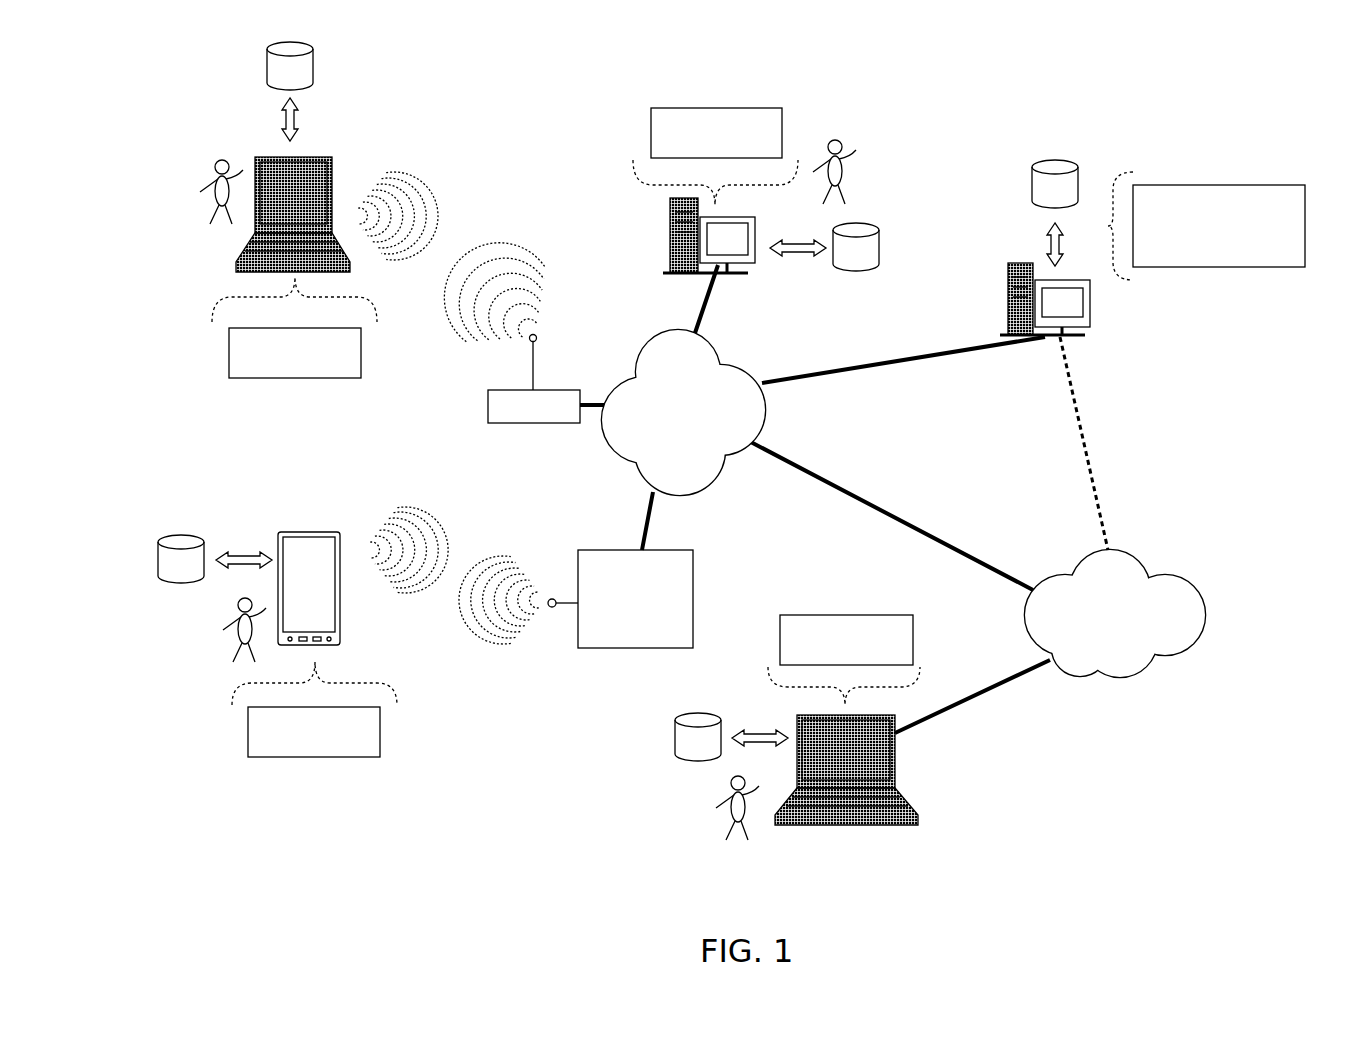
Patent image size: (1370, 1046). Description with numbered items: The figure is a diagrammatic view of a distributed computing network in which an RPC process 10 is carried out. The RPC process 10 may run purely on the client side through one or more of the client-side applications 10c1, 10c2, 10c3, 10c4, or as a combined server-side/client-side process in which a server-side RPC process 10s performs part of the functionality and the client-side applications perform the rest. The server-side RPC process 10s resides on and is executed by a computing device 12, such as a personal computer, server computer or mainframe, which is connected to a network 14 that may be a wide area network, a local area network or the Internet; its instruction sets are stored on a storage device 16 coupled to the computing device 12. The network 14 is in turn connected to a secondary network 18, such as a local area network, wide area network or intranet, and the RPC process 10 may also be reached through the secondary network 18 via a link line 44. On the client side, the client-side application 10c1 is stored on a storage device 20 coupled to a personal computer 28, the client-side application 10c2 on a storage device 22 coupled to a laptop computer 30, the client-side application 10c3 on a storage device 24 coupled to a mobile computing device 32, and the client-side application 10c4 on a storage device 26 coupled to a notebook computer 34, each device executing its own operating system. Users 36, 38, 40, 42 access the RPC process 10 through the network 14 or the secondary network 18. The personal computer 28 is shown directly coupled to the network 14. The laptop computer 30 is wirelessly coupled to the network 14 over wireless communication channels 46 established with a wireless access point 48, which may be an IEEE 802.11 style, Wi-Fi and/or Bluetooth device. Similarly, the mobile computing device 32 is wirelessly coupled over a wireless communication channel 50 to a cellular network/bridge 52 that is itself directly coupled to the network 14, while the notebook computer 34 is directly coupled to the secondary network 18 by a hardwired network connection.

The RPC process 10 is at (1159, 111).
The server-side RPC process 10s is at (1305, 225).
The client-side application 10c1 is at (782, 136).
The client-side application 10c2 is at (362, 355).
The client-side application 10c3 is at (380, 730).
The client-side application 10c4 is at (913, 632).
The computing device 12 is at (1007, 277).
The network 14 is at (683, 412).
The storage device 16 is at (1055, 184).
The secondary network 18 is at (1115, 613).
The storage device 20 is at (856, 247).
The storage device 22 is at (290, 66).
The storage device 24 is at (181, 559).
The storage device 26 is at (698, 737).
The personal computer 28 is at (757, 235).
The laptop computer 30 is at (328, 182).
The mobile computing device 32 is at (352, 585).
The notebook computer 34 is at (898, 762).
The user 36 is at (857, 155).
The user 38 is at (190, 186).
The user 40 is at (222, 612).
The user 42 is at (703, 802).
The link line 44 is at (1057, 448).
The wireless communication channel 46 is at (473, 232).
The wireless access point (WAP) 48 is at (483, 407).
The wireless communication channel 50 is at (467, 550).
The cellular network/bridge 52 is at (695, 565).